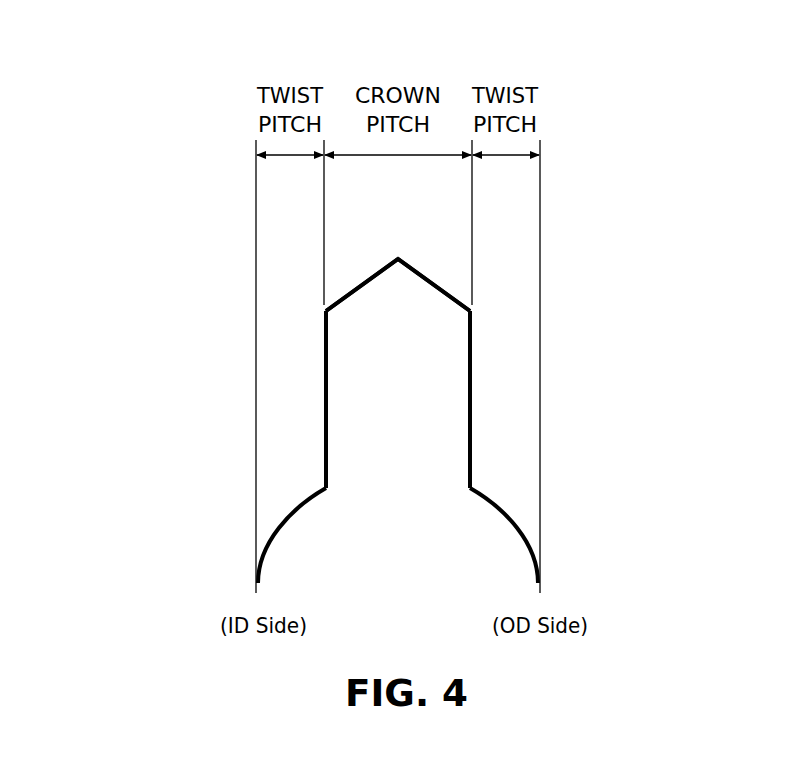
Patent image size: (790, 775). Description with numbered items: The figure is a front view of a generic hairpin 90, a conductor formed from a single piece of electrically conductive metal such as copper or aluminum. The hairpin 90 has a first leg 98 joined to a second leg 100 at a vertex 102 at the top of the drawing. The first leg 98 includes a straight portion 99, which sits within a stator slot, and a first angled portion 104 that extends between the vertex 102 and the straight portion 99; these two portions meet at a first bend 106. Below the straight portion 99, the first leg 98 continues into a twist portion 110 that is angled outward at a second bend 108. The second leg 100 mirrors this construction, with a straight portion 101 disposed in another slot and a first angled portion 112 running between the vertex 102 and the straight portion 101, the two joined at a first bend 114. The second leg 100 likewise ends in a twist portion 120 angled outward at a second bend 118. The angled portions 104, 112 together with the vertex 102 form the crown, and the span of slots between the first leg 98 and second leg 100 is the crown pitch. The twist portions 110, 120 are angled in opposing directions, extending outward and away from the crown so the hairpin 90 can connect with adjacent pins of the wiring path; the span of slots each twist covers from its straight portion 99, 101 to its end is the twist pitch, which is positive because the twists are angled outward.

The hairpin 90 is at (193, 83).
The first leg 98 is at (467, 453).
The straight portion 99 is at (473, 373).
The second leg 100 is at (324, 452).
The straight portion 101 is at (329, 432).
The vertex 102 is at (398, 258).
The first angled portion 104 is at (440, 285).
The first bend 106 is at (466, 313).
The second bend 108 is at (465, 490).
The twist portion 110 is at (509, 524).
The first angled portion 112 is at (358, 287).
The first bend 114 is at (330, 313).
The second bend 118 is at (331, 490).
The twist portion 120 is at (286, 522).